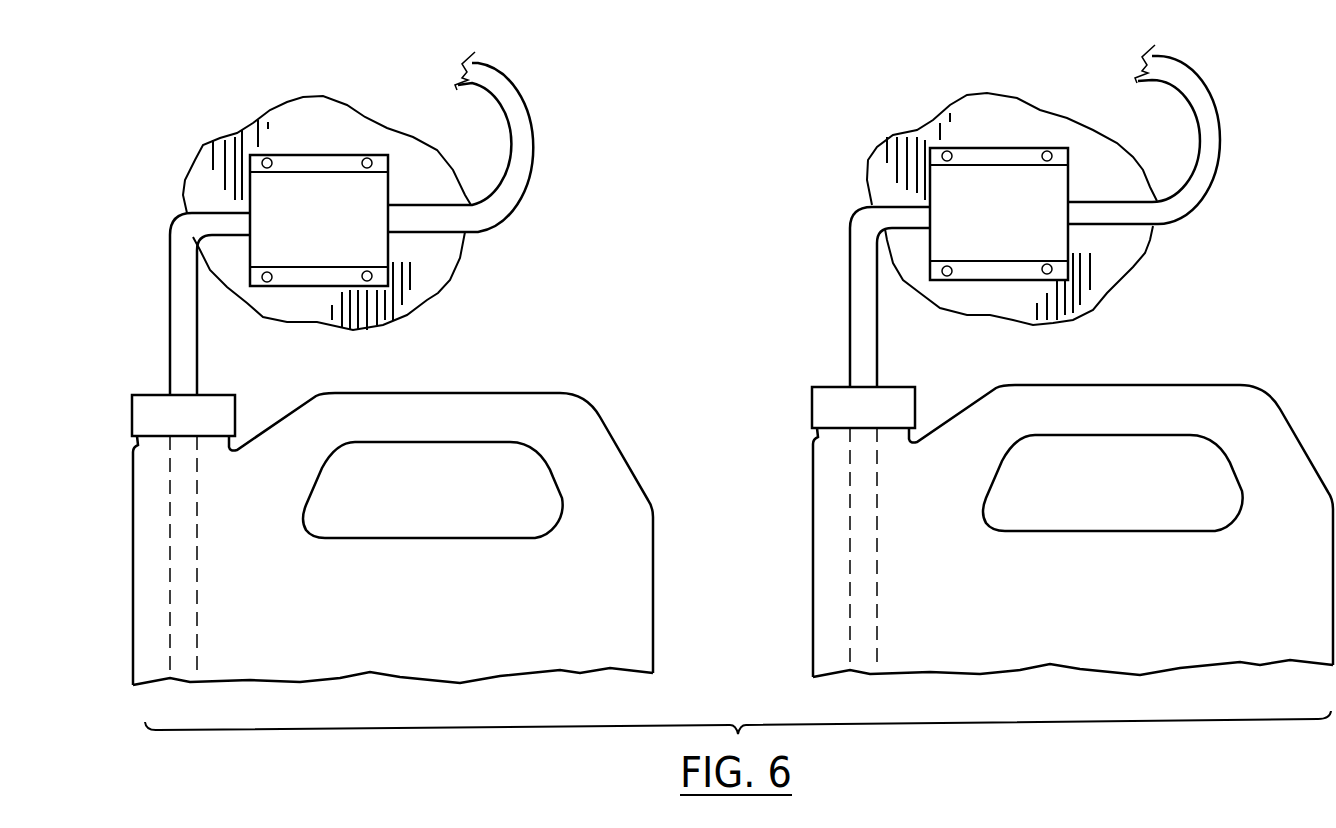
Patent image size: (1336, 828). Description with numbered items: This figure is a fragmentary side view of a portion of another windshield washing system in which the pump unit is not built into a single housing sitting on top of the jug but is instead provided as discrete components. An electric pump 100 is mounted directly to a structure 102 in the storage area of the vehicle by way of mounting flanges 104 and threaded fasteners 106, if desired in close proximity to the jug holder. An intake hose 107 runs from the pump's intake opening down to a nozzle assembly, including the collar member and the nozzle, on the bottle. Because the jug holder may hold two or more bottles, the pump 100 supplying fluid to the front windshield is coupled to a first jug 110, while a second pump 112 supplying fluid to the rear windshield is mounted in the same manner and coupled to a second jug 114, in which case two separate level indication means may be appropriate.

The pump 100 is at (300, 156).
The structure in the storage area of the vehicle 102 is at (383, 307).
The mounting flanges 104 is at (395, 273).
The threaded fasteners 106 is at (275, 278).
The intake hose 107 is at (185, 333).
The first jug 110 is at (403, 609).
The pump 112 is at (1038, 162).
The second jug 114 is at (1072, 531).